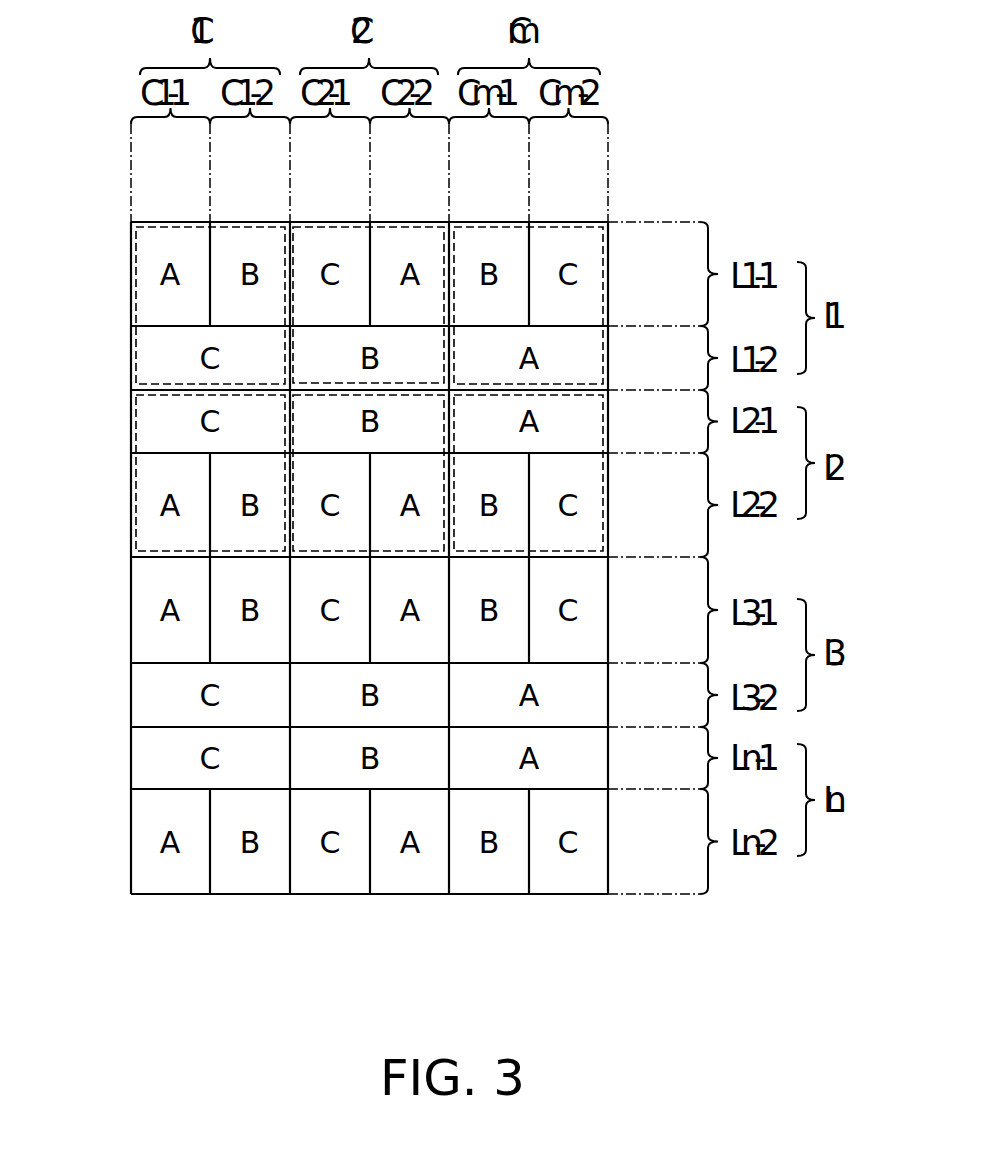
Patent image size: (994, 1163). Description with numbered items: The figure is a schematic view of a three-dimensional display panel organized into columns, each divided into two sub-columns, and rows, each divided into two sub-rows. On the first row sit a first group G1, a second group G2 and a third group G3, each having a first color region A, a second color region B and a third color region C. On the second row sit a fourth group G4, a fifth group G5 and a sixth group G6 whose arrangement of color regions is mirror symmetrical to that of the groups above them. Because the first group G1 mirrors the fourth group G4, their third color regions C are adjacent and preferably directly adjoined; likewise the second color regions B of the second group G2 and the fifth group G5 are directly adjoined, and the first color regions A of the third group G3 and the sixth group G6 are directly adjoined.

The first group G1 is at (131, 293).
The second group G2 is at (420, 222).
The third group G3 is at (609, 293).
The fourth group G4 is at (131, 497).
The fifth group G5 is at (327, 554).
The sixth group G6 is at (609, 497).